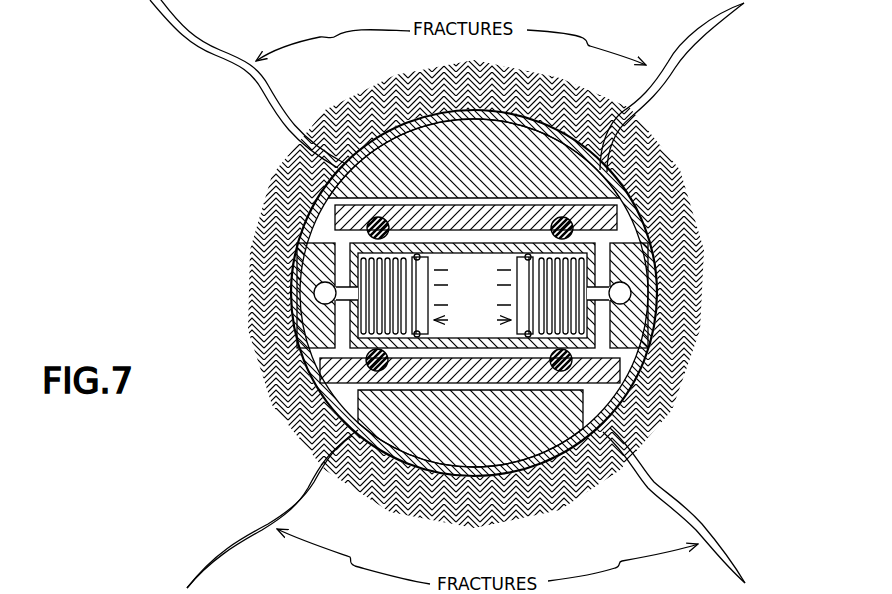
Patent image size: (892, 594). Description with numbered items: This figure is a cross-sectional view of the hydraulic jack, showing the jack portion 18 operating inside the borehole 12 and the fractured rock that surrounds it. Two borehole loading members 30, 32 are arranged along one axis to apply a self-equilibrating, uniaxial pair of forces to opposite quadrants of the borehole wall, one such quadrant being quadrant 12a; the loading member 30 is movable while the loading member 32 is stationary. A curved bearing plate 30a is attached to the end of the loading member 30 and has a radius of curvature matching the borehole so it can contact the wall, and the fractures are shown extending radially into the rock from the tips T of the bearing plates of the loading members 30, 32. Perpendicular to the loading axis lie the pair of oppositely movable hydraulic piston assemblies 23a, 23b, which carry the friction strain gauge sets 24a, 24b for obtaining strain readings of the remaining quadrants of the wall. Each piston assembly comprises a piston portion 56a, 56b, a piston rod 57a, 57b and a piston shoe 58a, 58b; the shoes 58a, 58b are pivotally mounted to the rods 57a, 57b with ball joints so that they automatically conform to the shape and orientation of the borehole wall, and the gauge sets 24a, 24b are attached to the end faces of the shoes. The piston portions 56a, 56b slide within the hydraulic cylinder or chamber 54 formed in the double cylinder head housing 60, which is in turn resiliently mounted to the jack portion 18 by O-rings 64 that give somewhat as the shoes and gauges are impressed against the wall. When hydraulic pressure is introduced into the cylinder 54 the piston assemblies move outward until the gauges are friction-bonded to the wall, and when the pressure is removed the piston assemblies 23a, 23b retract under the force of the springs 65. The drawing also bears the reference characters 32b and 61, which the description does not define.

The borehole 12 is at (300, 392).
The borehole quadrant 12a is at (254, 562).
The jack portion 18 is at (722, 383).
The piston assembly 23a is at (258, 274).
The piston assembly 23b is at (672, 303).
The strain gauge set 24a is at (300, 248).
The strain gauge set 24b is at (660, 285).
The borehole loading member 30 is at (492, 150).
The curved bearing plate 30a is at (548, 112).
The borehole loading member 32 is at (467, 465).
The bottom plug wall 32b is at (424, 478).
The hydraulic cylinder 54 is at (474, 275).
The piston portion 56a is at (421, 338).
The piston portion 56b is at (519, 338).
The piston rod 57a is at (315, 330).
The piston rod 57b is at (605, 288).
The piston shoe 58a is at (345, 316).
The piston shoe 58b is at (568, 320).
The double cylinder head housing 60 is at (447, 250).
The seal rings 61 is at (525, 256).
The O-rings 64 is at (370, 222).
The springs 65 is at (637, 327).
The bearing plate tips T is at (333, 170).